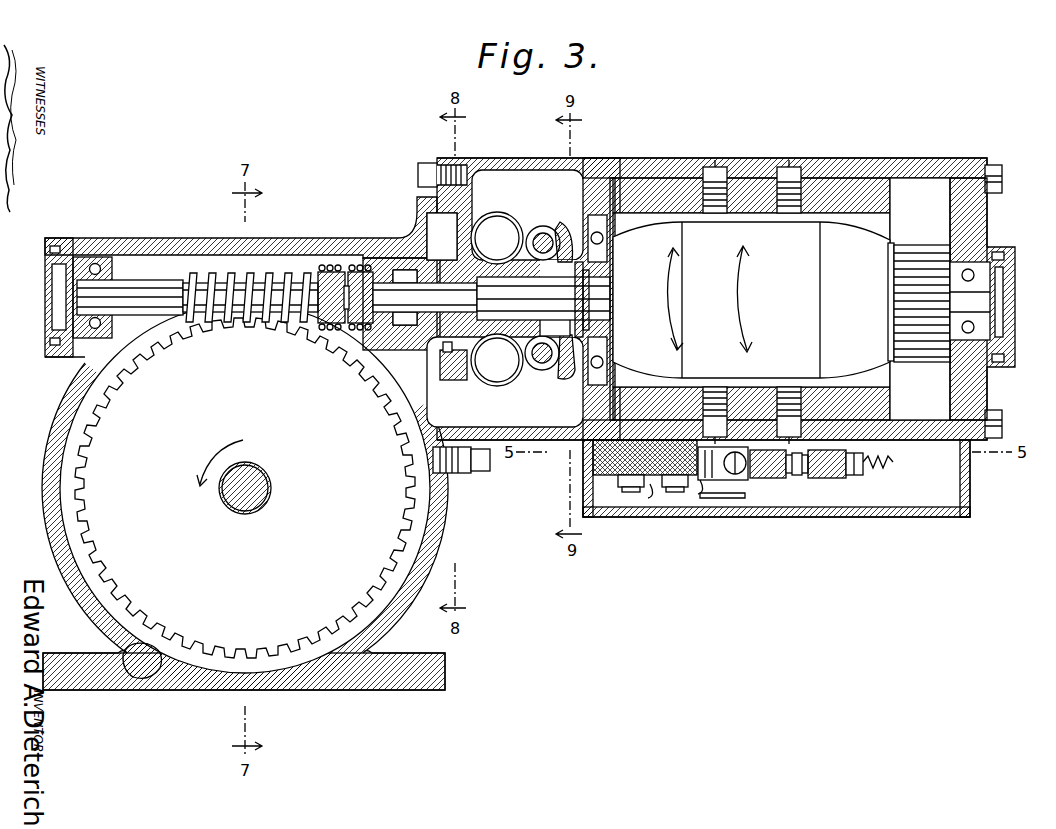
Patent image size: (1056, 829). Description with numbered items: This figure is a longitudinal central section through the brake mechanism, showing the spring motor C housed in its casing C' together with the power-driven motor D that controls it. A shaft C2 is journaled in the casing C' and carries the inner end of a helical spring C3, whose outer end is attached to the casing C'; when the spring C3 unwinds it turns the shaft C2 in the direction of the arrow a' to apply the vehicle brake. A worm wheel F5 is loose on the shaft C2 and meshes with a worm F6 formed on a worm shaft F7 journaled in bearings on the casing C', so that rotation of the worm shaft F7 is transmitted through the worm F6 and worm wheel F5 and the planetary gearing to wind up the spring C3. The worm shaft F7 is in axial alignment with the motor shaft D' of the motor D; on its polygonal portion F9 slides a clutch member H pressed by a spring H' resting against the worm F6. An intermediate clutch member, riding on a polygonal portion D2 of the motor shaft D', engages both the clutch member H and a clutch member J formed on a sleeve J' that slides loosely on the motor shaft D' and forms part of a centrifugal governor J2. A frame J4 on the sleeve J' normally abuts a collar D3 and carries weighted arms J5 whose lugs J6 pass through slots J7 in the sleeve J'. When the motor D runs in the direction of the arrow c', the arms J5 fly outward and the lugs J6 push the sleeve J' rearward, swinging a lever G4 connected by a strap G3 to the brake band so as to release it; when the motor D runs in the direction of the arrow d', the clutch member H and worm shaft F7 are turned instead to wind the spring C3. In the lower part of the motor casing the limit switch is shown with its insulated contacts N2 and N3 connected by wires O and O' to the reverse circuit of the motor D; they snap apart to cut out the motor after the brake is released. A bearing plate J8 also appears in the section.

The spring motor C is at (235, 444).
The casing C' is at (72, 508).
The shaft C2 is at (256, 488).
The helical spring C3 is at (130, 660).
The worm wheel F5 is at (245, 488).
The worm F6 is at (272, 273).
The worm shaft F7 is at (145, 280).
The polygonal portion F9 is at (354, 272).
The clutch member H is at (349, 313).
The spring H' is at (331, 272).
The clutch member J is at (388, 326).
The sleeve J' is at (447, 236).
The centrifugal governor J2 is at (497, 224).
The frame J4 is at (570, 370).
The weighted arms J5 is at (520, 380).
The lugs J6 is at (566, 247).
The slots J7 is at (590, 277).
The bearing plate J8 is at (555, 326).
The strap G3 is at (450, 365).
The lever G4 is at (463, 383).
The power-driven motor D is at (781, 300).
The motor shaft D' is at (543, 298).
The polygonal portion D2 is at (425, 297).
The collar D3 is at (615, 267).
The arrow d' is at (672, 299).
The arrow c' is at (742, 299).
The arrow a' is at (220, 461).
The wire O is at (719, 498).
The wire O' is at (728, 520).
The insulated contact N2 is at (793, 478).
The insulated contact N3 is at (805, 478).